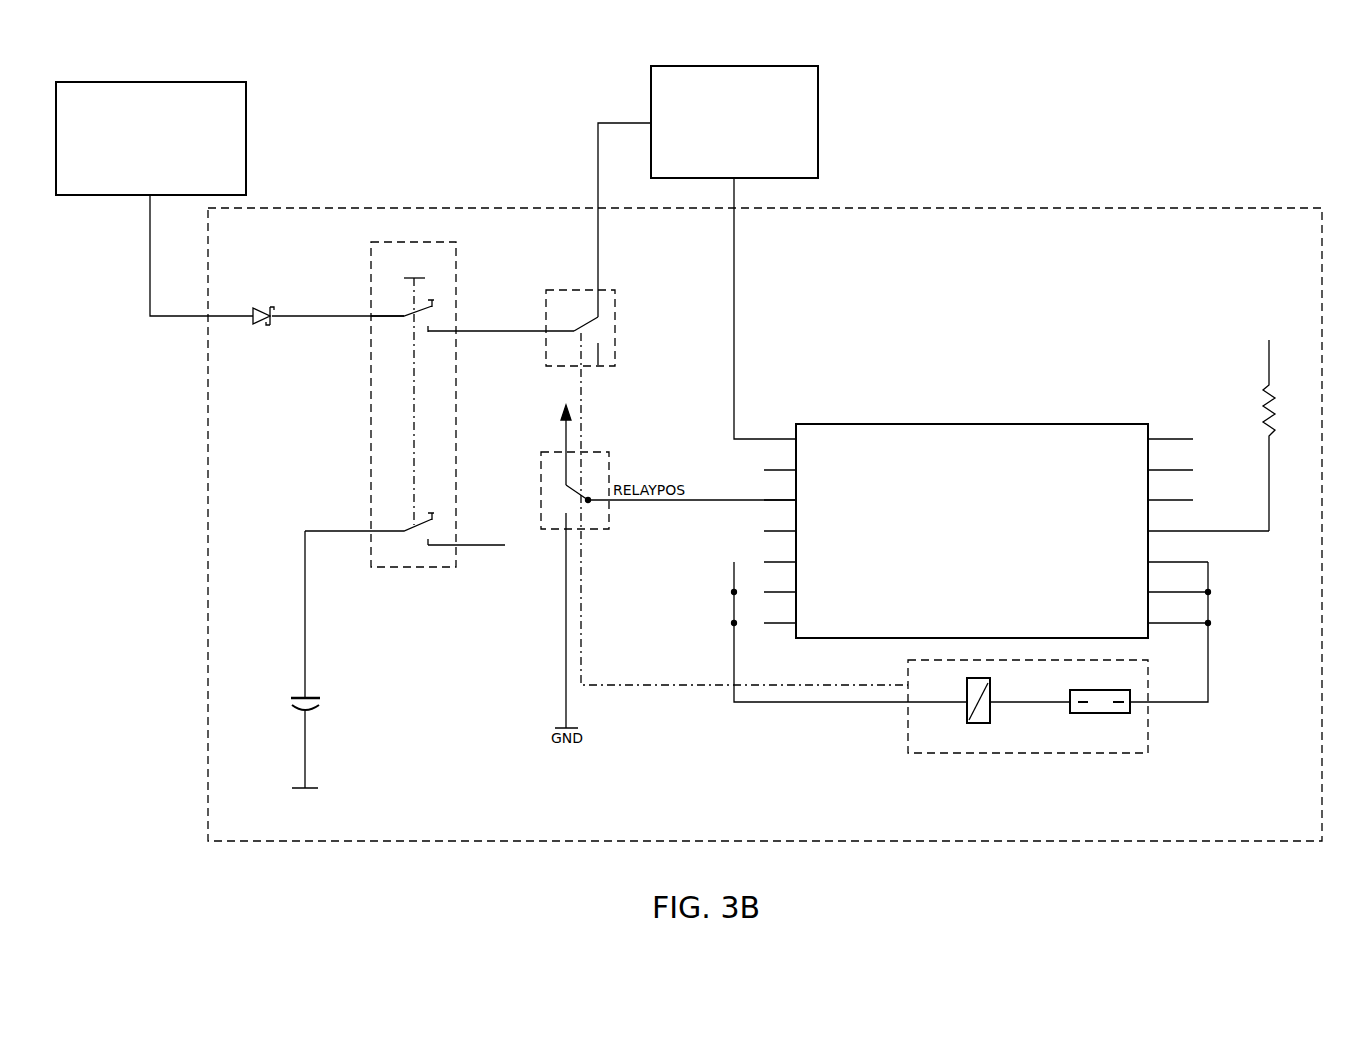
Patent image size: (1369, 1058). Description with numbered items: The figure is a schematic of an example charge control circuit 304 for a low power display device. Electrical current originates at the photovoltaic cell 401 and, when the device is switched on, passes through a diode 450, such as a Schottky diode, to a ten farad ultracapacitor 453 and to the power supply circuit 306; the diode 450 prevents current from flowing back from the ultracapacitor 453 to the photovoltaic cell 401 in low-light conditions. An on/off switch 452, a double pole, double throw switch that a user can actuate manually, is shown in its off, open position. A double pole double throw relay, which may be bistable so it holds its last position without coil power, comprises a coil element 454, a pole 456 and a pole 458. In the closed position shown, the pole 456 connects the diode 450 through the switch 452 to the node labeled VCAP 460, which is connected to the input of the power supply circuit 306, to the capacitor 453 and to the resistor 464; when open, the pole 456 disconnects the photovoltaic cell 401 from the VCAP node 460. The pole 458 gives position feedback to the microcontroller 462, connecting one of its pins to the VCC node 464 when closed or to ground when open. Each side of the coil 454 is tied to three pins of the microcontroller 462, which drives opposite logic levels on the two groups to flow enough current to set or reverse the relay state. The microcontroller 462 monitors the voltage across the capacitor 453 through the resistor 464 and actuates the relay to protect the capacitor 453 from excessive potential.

The photovoltaic cell 401 is at (206, 82).
The charge control circuit 304 is at (330, 208).
The power supply circuit 306 is at (818, 122).
The diode 450 is at (261, 324).
The on/off switch 452 is at (456, 268).
The ultracapacitor 453 is at (300, 692).
The coil element 454 is at (1098, 753).
The pole 456 is at (615, 327).
The pole 458 is at (609, 467).
The VCAP node 460 is at (480, 552).
The microcontroller 462 is at (925, 424).
The resistor 464 is at (556, 428).